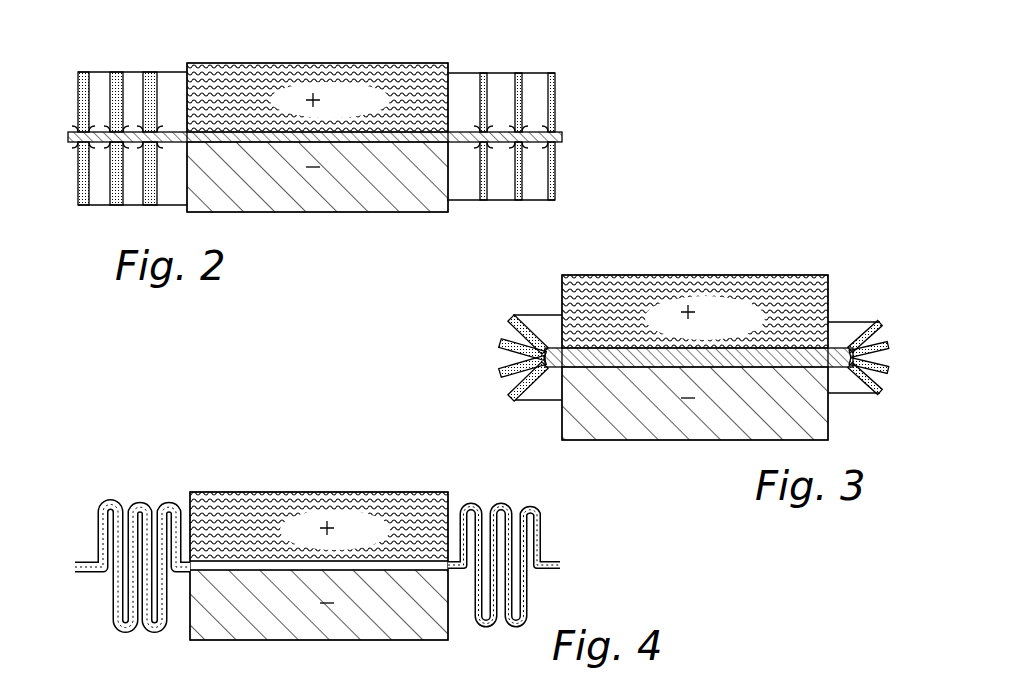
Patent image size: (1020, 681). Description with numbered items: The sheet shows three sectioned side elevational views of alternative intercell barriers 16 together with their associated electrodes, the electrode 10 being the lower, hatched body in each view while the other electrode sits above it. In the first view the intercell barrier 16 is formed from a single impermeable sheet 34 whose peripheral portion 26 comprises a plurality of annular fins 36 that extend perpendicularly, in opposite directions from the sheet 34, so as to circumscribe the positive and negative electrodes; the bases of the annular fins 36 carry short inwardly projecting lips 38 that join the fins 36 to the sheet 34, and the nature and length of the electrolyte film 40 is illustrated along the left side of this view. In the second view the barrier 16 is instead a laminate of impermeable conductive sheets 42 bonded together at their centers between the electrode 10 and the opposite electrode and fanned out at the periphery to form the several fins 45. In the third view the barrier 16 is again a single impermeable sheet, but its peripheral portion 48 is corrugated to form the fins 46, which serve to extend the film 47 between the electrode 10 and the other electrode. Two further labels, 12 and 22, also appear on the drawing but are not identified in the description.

In FIG. 2, the electrode 10 is at (383, 190).
In FIG. 3, the electrode 10 is at (818, 420).
In FIG. 4, the electrode 10 is at (410, 630).
In FIG. 2, the positive active material 12 is at (283, 75).
In FIG. 3, the positive active material 12 is at (810, 300).
In FIG. 4, the positive active material 12 is at (343, 505).
In FIG. 2, the intercell barrier 16 is at (473, 206).
In FIG. 3, the intercell barrier 16 is at (892, 334).
In FIG. 4, the intercell barrier 16 is at (479, 487).
In FIG. 3, the current collector plate with fins 22 is at (546, 321).
In FIG. 2, the peripheral portion 26 is at (107, 66).
In FIG. 2, the impermeable sheet 34 is at (562, 137).
In FIG. 2, the annular fins 36 is at (150, 72).
In FIG. 2, the lips 38 is at (512, 146).
In FIG. 2, the electrolyte film 40 is at (81, 205).
In FIG. 3, the impermeable conductive sheets 42 is at (547, 373).
In FIG. 3, the fins 45 is at (503, 345).
In FIG. 4, the fins 46 is at (133, 628).
In FIG. 4, the film 47 is at (108, 505).
In FIG. 4, the peripheral portion 48 is at (171, 499).